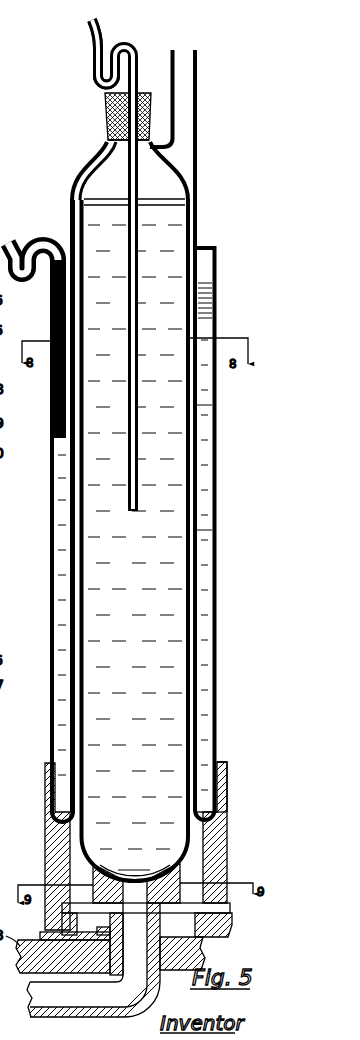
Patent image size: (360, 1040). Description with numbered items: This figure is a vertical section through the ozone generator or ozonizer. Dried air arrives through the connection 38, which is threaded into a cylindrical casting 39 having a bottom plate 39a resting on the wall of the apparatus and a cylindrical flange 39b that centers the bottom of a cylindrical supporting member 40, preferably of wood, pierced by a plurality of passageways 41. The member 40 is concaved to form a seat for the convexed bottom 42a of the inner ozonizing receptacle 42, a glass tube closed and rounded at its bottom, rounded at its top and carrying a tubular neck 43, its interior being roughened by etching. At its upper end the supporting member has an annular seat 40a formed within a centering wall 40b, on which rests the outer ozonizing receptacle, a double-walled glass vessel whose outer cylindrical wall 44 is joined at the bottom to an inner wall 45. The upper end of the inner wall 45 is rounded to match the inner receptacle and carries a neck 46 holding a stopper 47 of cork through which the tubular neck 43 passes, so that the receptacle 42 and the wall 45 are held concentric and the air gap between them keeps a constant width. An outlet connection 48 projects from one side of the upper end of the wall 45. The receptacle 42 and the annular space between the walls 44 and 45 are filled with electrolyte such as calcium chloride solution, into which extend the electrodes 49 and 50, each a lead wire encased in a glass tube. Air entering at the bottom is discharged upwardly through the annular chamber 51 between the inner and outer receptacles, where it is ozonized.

The connection 38 is at (33, 992).
The cylindrical casting 39 is at (240, 912).
The bottom plate 39a is at (235, 933).
The cylindrical flange 39b is at (232, 905).
The supporting member 40 is at (218, 840).
The annular seat 40a is at (212, 812).
The centering wall 40b is at (227, 772).
The passageways 41 is at (70, 840).
The inner ozonizing receptacle 42 is at (190, 238).
The convexed bottom 42a is at (100, 867).
The tubular neck 43 is at (141, 58).
The outer cylindrical wall 44 is at (215, 470).
The inner wall 45 is at (197, 536).
The neck 46 is at (104, 120).
The stopper 47 is at (108, 132).
The outlet connection 48 is at (186, 82).
The electrode 49 is at (88, 70).
The electrode 50 is at (28, 263).
The annular chamber 51 is at (190, 420).